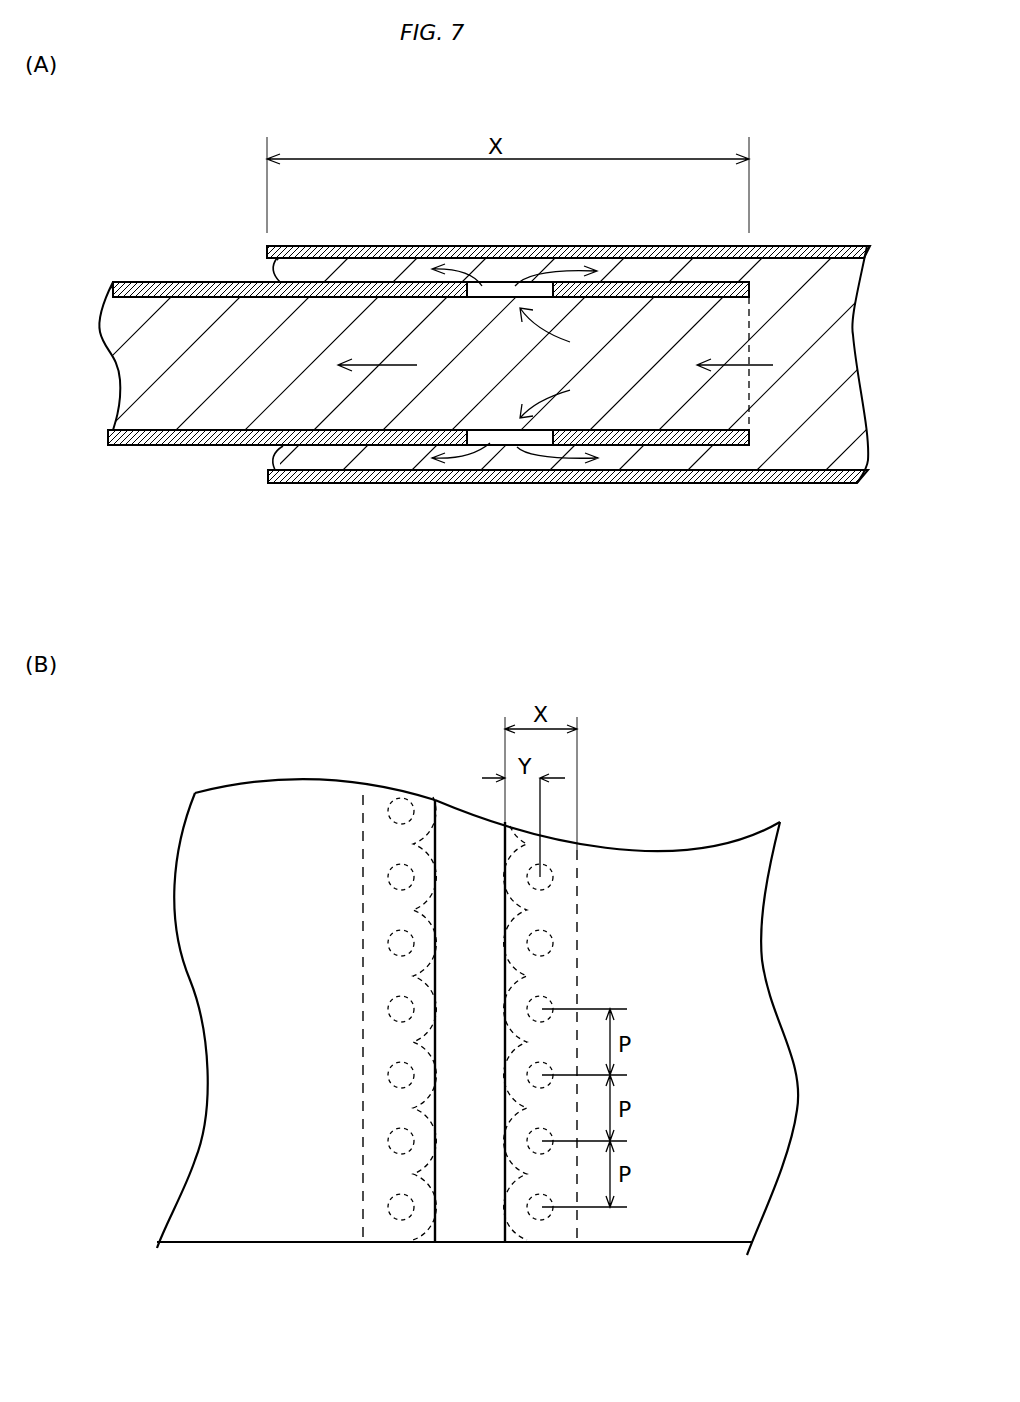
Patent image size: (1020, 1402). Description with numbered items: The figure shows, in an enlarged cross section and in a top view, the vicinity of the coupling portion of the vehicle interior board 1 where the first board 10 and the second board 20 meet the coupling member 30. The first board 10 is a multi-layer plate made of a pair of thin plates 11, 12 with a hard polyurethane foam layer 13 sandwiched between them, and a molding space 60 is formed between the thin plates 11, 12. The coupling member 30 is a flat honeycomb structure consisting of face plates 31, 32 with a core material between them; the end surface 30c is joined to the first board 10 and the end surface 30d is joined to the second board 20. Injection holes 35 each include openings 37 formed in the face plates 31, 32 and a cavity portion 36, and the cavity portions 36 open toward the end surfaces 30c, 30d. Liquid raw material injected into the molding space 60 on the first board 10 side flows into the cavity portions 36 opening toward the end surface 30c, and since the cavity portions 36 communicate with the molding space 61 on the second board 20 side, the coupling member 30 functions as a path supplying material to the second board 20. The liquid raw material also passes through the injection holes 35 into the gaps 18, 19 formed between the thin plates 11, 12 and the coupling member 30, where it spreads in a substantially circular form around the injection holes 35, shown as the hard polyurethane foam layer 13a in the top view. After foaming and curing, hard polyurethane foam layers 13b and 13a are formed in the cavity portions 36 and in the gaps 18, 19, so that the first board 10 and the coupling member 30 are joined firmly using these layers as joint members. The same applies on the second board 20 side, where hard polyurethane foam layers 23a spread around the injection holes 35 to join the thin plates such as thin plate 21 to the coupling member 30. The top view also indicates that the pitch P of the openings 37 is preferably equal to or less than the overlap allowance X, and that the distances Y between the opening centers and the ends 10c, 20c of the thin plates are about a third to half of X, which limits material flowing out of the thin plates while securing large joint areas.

The vehicle interior board 1 is at (700, 720).
The first board 10 is at (825, 144).
The end of thin plate 10c is at (265, 250).
The thin plate 11 is at (828, 258).
The thin plate 12 is at (787, 483).
The hard polyurethane foam layer 13 is at (810, 398).
The hard polyurethane foam layer 13a is at (362, 270).
The hard polyurethane foam layer 13b is at (402, 383).
The gap 18 is at (655, 266).
The gap 19 is at (620, 458).
The second board 20 is at (78, 395).
The end of thin plate 20c is at (437, 1113).
The thin plate 21 is at (222, 825).
The hard polyurethane foam layer 23a is at (437, 905).
The coupling member 30 is at (120, 152).
The end surface 30c is at (752, 300).
The end surface 30d is at (363, 840).
The face plate 31 is at (165, 282).
The face plate 32 is at (185, 447).
The injection hole 35 is at (470, 1009).
The cavity portion 36 is at (670, 390).
The opening 37 is at (515, 288).
The molding space 60 is at (843, 378).
The molding space 61 is at (163, 365).